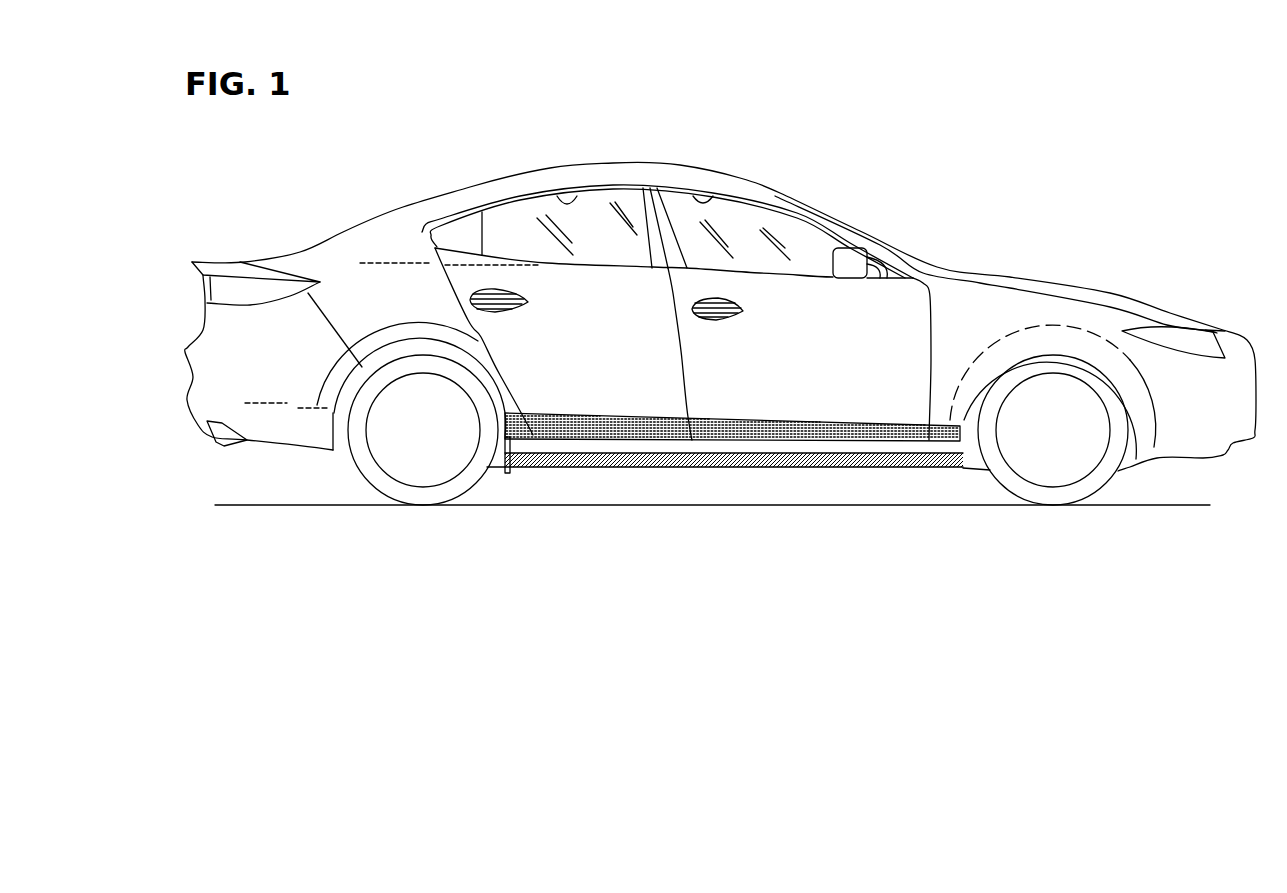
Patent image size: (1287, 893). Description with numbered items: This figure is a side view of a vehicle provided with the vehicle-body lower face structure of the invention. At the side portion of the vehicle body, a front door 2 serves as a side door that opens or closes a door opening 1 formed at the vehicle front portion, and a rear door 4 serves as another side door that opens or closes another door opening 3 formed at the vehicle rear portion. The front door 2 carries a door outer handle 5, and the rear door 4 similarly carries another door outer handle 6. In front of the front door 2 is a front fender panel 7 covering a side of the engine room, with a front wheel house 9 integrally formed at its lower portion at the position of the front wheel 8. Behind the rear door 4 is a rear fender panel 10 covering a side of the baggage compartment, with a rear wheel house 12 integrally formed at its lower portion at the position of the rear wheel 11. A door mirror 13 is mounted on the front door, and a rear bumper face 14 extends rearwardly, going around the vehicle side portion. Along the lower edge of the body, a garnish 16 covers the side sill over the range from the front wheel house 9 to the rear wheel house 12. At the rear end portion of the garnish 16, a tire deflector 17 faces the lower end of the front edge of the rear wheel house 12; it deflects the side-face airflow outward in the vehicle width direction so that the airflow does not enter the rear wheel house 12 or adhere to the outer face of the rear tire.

The door opening 1 is at (712, 196).
The front door 2 is at (796, 344).
The door opening 3 is at (557, 196).
The rear door 4 is at (572, 344).
The door outer handle 5 is at (710, 322).
The door outer handle 6 is at (494, 313).
The front fender panel 7 is at (980, 307).
The front wheel 8 is at (1103, 488).
The front wheel house 9 is at (1117, 377).
The rear fender panel 10 is at (392, 295).
The rear wheel 11 is at (360, 477).
The rear wheel house 12 is at (346, 392).
The door mirror 13 is at (855, 272).
The rear bumper face 14 is at (215, 340).
The garnish 16 is at (780, 440).
The tire deflector 17 is at (512, 470).